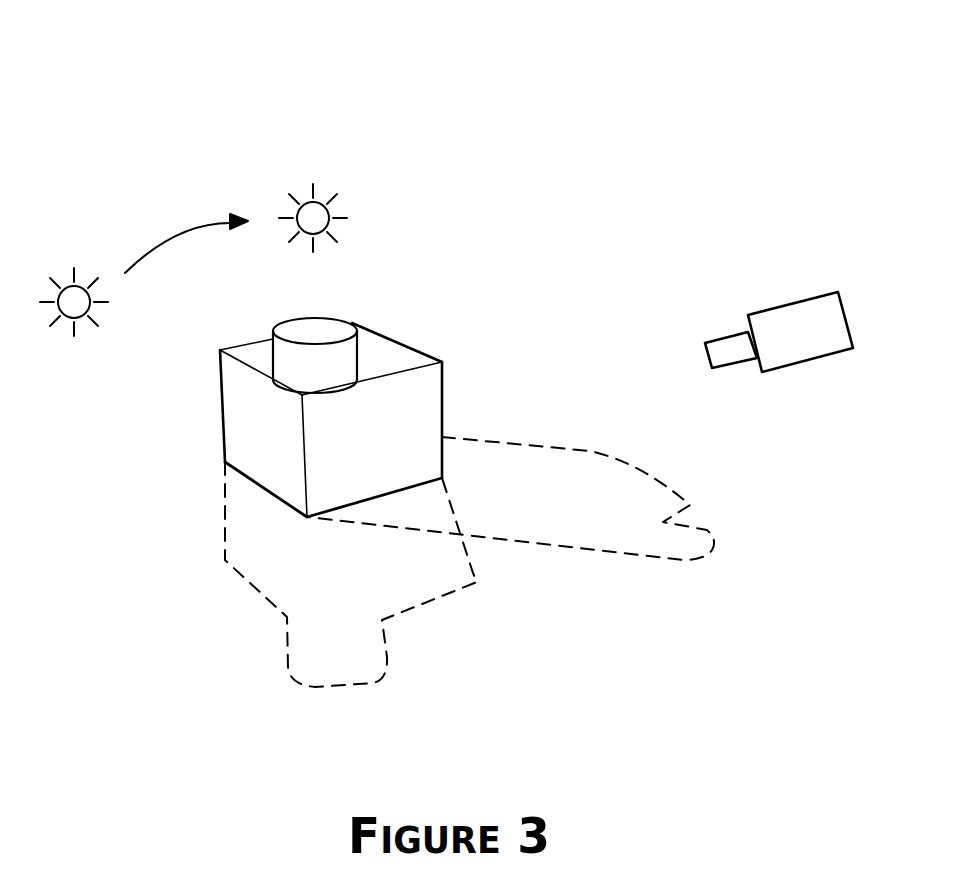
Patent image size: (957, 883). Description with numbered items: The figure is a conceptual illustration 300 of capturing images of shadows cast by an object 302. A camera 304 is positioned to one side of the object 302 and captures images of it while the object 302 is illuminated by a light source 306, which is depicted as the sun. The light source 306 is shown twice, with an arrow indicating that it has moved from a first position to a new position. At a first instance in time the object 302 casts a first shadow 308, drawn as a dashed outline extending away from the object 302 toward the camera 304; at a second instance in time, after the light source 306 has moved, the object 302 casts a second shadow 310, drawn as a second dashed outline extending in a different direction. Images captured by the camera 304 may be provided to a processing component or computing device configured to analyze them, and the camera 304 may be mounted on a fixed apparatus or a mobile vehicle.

The conceptual illustration 300 is at (75, 70).
The object 302 is at (220, 375).
The camera 304 is at (758, 368).
The light source 306 is at (75, 333).
The first shadow 308 is at (655, 557).
The second shadow 310 is at (288, 667).